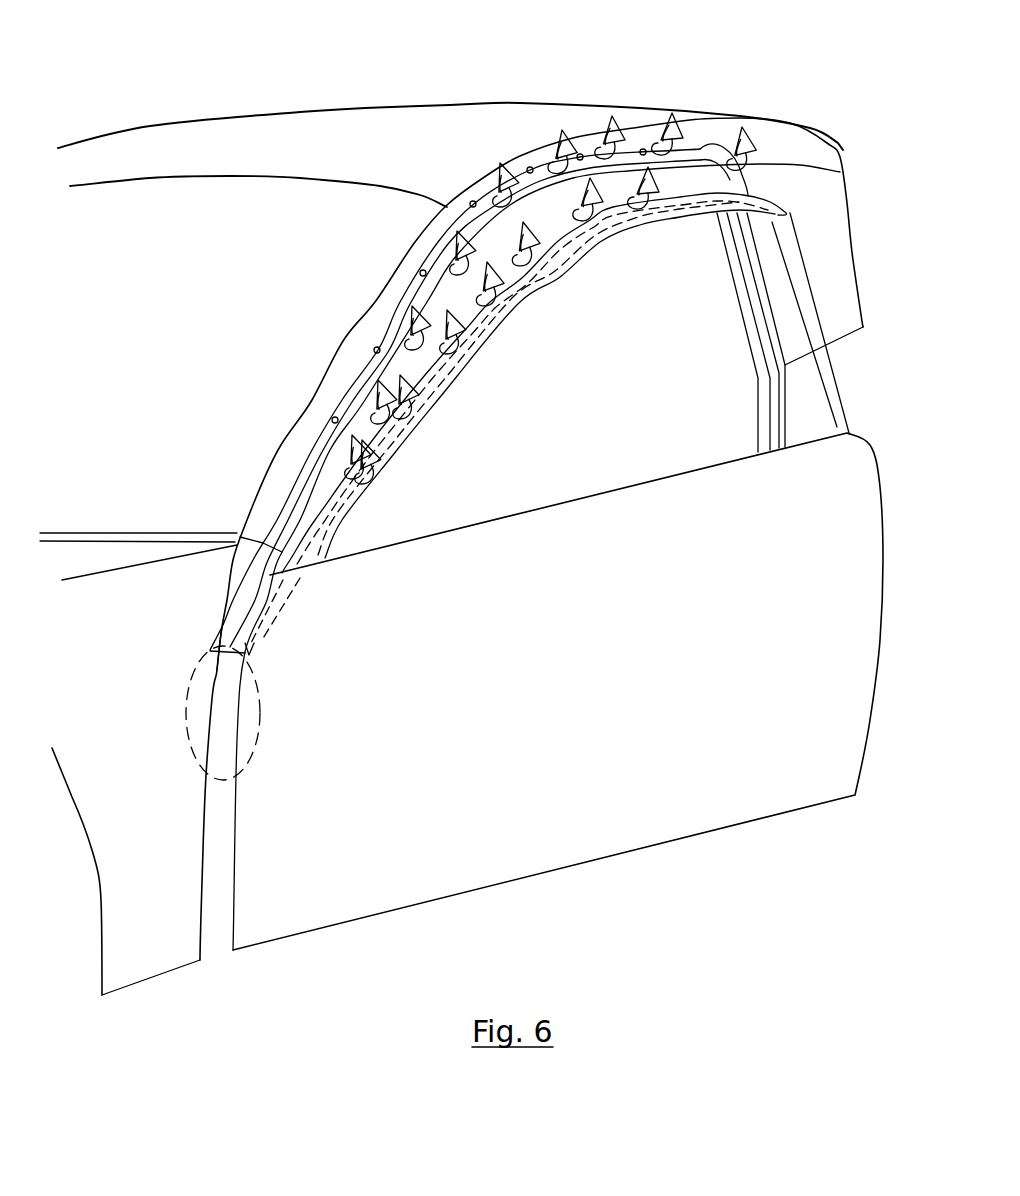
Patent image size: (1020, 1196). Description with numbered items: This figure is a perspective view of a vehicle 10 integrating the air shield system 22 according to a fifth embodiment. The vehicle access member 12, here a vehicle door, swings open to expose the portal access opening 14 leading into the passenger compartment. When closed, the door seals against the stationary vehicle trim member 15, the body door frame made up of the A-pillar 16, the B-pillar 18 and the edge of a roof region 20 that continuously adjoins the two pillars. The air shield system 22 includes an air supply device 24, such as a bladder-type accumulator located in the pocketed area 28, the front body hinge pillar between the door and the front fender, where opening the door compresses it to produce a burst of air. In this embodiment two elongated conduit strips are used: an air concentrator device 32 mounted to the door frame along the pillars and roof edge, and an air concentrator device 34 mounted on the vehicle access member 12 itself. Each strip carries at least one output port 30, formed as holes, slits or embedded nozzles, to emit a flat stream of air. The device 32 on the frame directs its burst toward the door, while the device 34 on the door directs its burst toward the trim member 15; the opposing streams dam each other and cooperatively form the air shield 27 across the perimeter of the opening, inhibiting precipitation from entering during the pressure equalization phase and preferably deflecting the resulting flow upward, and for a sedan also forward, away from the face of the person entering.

The vehicle 10 is at (353, 84).
The vehicle access member 12 is at (605, 617).
The portal access opening 14 is at (748, 147).
The stationary vehicle trim member 15 is at (528, 163).
The A-pillar 16 is at (304, 436).
The B-pillar 18 is at (758, 375).
The edge of a roof region 20 is at (690, 187).
The air shield system 22 is at (195, 738).
The air supply device 24 is at (212, 649).
The air shield 27 is at (568, 229).
The pocketed area 28 is at (119, 779).
The output port 30 is at (477, 190).
The air concentrator device 32 is at (412, 292).
The air concentrator device 34 is at (555, 278).